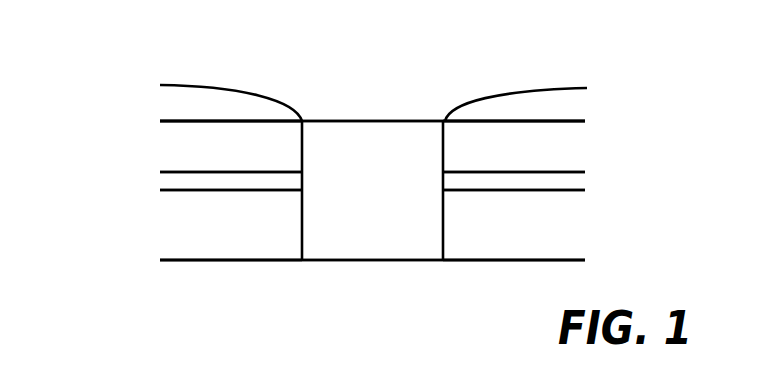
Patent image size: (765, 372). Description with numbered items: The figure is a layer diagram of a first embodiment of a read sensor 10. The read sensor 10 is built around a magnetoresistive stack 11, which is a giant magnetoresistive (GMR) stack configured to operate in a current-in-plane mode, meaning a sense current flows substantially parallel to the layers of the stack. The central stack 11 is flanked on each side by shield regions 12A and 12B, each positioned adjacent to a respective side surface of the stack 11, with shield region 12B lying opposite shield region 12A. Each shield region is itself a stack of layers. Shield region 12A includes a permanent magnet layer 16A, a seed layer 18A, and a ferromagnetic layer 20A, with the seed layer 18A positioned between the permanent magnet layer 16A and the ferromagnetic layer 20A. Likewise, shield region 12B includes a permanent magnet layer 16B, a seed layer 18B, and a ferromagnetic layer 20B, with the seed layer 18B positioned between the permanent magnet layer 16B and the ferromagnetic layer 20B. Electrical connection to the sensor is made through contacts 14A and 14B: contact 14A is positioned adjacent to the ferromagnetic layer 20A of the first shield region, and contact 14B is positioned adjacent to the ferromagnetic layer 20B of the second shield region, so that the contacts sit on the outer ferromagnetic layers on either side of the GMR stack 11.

The read sensor 10 is at (249, 60).
The magnetoresistive stack 11 is at (338, 138).
The shield region 12A is at (62, 118).
The shield region 12B is at (683, 125).
The contact 14A is at (180, 102).
The contact 14B is at (567, 107).
The permanent magnet layer 16A is at (177, 223).
The permanent magnet layer 16B is at (567, 227).
The seed layer 18A is at (177, 180).
The seed layer 18B is at (567, 183).
The ferromagnetic layer 20A is at (177, 153).
The ferromagnetic layer 20B is at (562, 150).